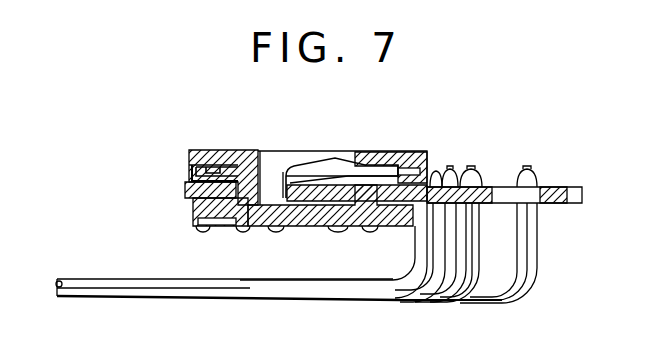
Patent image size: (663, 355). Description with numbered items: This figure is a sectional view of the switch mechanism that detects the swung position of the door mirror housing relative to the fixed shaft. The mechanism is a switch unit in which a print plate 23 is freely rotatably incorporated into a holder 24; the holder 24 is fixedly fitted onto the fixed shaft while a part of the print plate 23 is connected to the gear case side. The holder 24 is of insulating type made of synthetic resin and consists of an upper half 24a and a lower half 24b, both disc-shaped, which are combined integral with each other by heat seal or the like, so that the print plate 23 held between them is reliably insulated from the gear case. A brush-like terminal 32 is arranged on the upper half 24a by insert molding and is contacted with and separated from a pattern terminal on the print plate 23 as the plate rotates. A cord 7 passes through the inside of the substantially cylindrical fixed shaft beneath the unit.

The cord 7 is at (247, 299).
The print plate 23 is at (186, 191).
The holder 24 is at (190, 162).
The upper half 24a is at (229, 162).
The lower half 24b is at (199, 227).
The brush-like terminal 32 is at (323, 178).